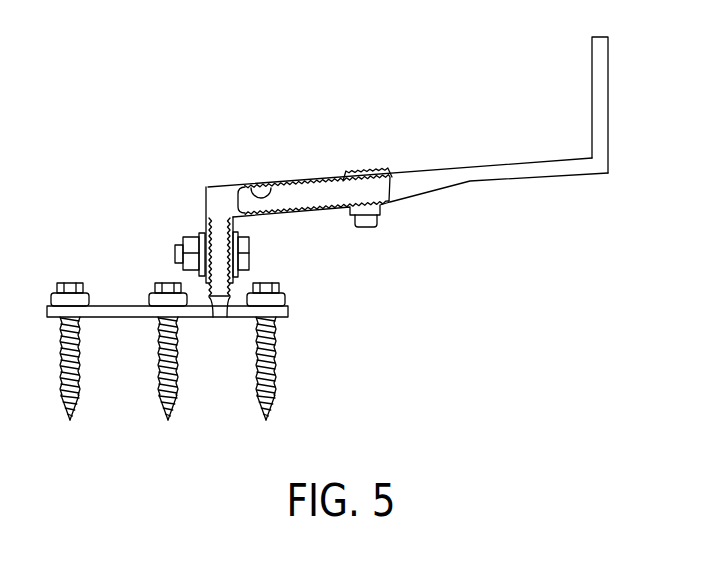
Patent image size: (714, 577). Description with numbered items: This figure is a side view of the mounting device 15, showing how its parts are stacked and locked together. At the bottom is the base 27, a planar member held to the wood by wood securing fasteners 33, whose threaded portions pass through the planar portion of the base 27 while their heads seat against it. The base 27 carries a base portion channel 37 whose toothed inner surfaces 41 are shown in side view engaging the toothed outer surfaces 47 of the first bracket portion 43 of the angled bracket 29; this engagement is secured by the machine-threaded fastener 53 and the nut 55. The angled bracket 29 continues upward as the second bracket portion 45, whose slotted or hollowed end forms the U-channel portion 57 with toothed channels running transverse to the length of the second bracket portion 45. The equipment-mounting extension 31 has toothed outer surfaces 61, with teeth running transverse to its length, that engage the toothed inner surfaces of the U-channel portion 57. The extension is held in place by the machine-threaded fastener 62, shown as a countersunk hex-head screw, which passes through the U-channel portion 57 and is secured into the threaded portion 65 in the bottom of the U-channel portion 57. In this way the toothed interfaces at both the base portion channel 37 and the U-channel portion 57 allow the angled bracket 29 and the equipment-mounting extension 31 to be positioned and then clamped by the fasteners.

The mounting device 15 is at (322, 80).
The base 27 is at (108, 298).
The angled bracket 29 is at (307, 178).
The equipment-mounting extension 31 is at (452, 168).
The wood securing fasteners 33 is at (72, 283).
The base portion channel 37 is at (201, 236).
The toothed inner surfaces 41 is at (213, 318).
The first bracket portion 43 is at (206, 200).
The second bracket portion 45 is at (220, 186).
The toothed outer surfaces 47 is at (228, 318).
The machine-threaded fastener 53 is at (250, 250).
The nut 55 is at (175, 243).
The U-channel portion 57 is at (280, 208).
The toothed outer surfaces 61 is at (269, 187).
The machine-threaded fastener 62 is at (361, 172).
The threaded portion 65 is at (385, 210).